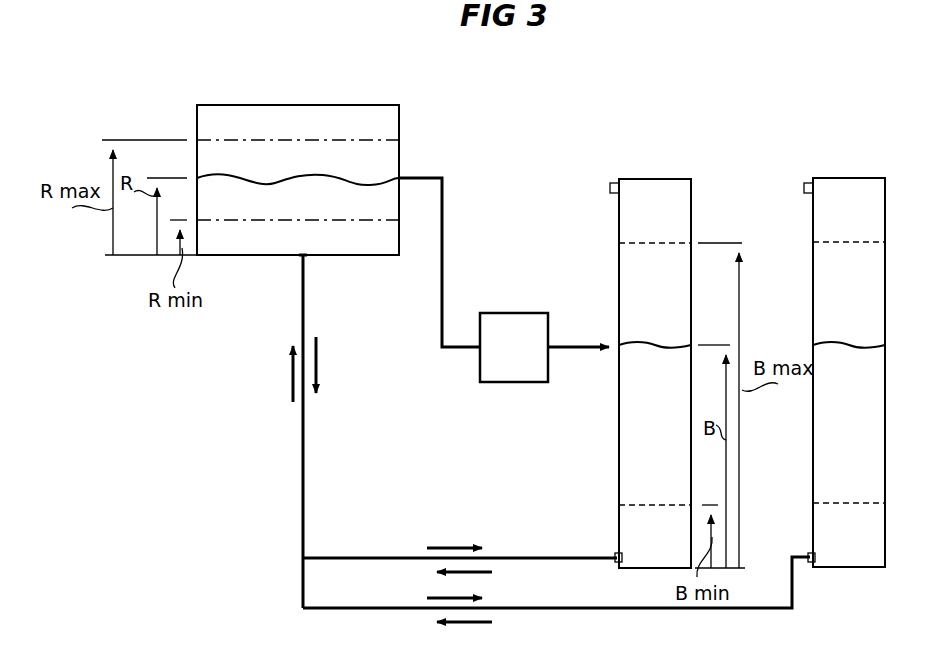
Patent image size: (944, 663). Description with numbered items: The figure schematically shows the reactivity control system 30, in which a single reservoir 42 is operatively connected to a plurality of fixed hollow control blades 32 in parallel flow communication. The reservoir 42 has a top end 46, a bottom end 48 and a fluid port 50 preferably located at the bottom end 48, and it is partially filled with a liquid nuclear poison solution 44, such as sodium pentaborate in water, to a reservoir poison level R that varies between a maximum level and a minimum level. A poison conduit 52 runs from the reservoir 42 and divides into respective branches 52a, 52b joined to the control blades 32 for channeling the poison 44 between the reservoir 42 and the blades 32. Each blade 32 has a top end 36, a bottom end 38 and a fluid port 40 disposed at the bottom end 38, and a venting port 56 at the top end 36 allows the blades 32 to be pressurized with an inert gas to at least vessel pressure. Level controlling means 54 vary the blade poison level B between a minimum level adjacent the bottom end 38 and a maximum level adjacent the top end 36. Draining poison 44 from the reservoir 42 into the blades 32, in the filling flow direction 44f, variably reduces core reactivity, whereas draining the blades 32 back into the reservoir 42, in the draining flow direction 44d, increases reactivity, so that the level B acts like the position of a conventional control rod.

The reactivity control system 30 is at (530, 98).
The hollow control blades 32 is at (619, 288).
The blade top end 36 is at (691, 200).
The blade bottom end 38 is at (648, 568).
The fluid port 40 is at (617, 555).
The reservoir 42 is at (197, 115).
The liquid nuclear poison solution 44 is at (352, 178).
The draining flow direction 44d is at (293, 372).
The filling flow direction 44f is at (316, 368).
The reservoir top end 46 is at (305, 105).
The reservoir bottom end 48 is at (353, 257).
The reservoir fluid port 50 is at (300, 262).
The poison conduit 52 is at (303, 495).
The poison conduit branch 52a is at (368, 557).
The poison conduit branch 52b is at (360, 610).
The level controlling means 54 is at (503, 383).
The venting port 56 is at (612, 183).